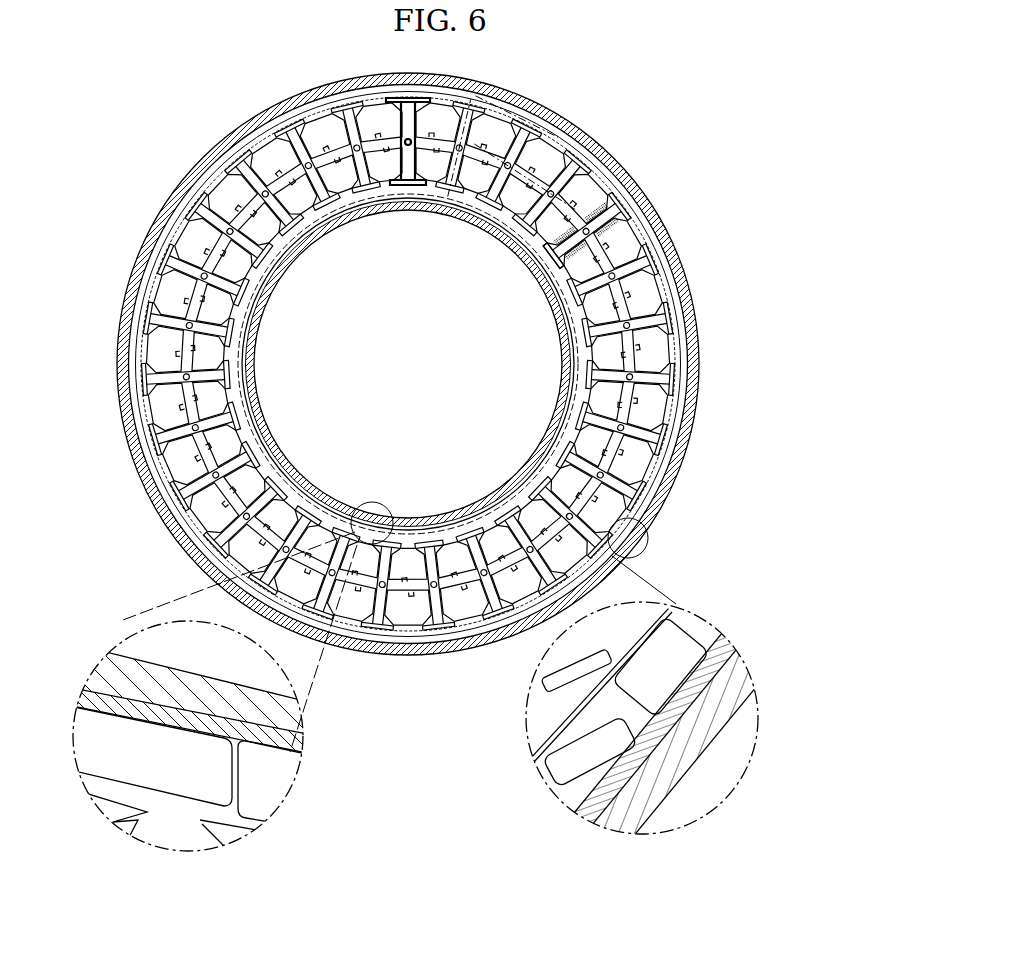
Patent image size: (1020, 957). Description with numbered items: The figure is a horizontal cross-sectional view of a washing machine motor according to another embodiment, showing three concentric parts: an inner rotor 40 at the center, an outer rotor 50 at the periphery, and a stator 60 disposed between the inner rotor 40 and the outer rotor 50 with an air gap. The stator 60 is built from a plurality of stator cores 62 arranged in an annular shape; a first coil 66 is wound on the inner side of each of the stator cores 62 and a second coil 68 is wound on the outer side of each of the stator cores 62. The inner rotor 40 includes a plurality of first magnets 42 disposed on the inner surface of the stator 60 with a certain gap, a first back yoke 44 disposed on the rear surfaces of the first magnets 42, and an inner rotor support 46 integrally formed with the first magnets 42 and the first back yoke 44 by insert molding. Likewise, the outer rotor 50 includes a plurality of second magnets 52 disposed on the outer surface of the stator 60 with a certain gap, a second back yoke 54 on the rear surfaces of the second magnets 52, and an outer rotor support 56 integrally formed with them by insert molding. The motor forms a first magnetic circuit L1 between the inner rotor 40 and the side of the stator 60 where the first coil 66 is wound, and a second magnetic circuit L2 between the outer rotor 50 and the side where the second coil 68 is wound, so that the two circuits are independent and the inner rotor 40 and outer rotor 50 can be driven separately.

The inner rotor 40 is at (213, 736).
The first magnets 42 is at (275, 782).
The first back yoke 44 is at (289, 753).
The inner rotor support 46 is at (295, 727).
The outer rotor 50 is at (669, 723).
The second magnets 52 is at (693, 640).
The second back yoke 54 is at (720, 668).
The outer rotor support 56 is at (692, 735).
The stator 60 is at (640, 242).
The stator cores 62 is at (562, 250).
The first coil 66 is at (541, 238).
The second coil 68 is at (607, 197).
The first magnetic circuit L1 is at (552, 212).
The second magnetic circuit L2 is at (558, 140).